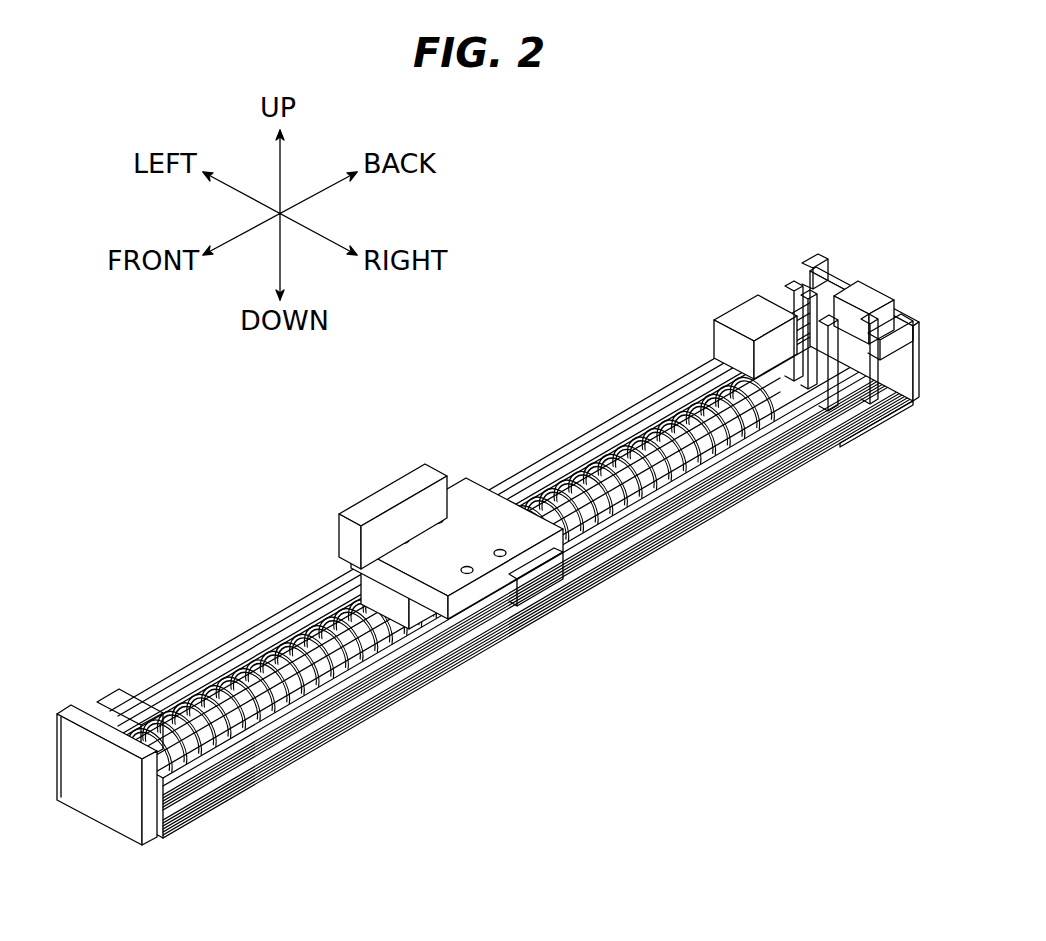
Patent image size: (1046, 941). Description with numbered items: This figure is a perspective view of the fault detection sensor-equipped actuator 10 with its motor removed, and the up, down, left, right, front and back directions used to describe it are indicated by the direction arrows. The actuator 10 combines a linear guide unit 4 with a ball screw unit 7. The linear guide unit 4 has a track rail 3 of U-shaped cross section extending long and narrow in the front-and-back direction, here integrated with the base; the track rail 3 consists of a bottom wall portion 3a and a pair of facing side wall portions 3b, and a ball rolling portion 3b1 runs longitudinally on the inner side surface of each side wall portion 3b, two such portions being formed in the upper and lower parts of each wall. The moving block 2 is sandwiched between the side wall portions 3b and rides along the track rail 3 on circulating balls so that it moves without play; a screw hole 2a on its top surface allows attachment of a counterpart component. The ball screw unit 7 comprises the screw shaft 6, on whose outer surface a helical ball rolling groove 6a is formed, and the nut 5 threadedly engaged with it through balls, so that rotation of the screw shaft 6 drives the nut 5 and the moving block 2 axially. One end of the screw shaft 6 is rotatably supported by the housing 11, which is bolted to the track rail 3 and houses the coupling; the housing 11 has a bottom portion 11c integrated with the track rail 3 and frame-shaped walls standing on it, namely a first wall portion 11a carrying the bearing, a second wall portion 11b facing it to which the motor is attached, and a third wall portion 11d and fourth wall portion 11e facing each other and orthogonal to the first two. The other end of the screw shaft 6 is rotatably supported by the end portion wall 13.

The moving block 2 is at (465, 533).
The screw hole 2a is at (418, 472).
The track rail 3 is at (540, 460).
The bottom wall portion 3a is at (604, 575).
The side wall portions 3b is at (592, 432).
The ball rolling portion 3b1 is at (612, 412).
The linear guide unit 4 is at (528, 418).
The nut 5 is at (375, 588).
The screw shaft 6 is at (248, 652).
The helical ball rolling groove 6a is at (318, 650).
The ball screw unit 7 is at (272, 536).
The actuator 10 is at (660, 243).
The housing 11 is at (822, 268).
The first wall portion 11a is at (735, 341).
The second wall portion 11b is at (852, 298).
The bottom portion 11c is at (866, 430).
The third wall portion 11d is at (800, 305).
The fourth wall portion 11e is at (865, 345).
The end portion wall 13 is at (100, 780).